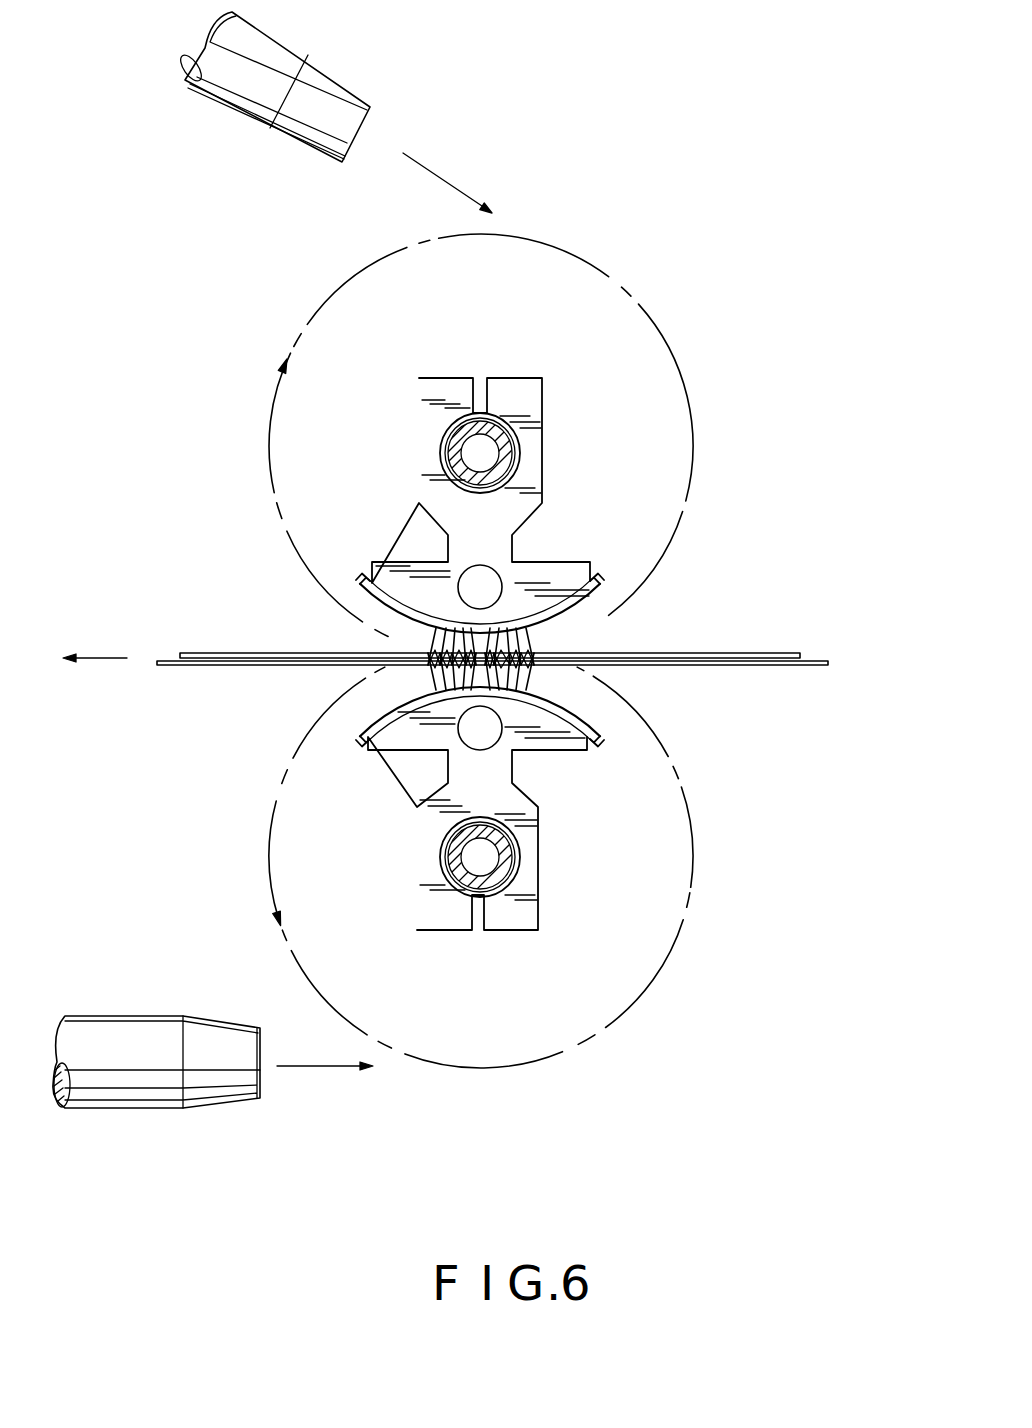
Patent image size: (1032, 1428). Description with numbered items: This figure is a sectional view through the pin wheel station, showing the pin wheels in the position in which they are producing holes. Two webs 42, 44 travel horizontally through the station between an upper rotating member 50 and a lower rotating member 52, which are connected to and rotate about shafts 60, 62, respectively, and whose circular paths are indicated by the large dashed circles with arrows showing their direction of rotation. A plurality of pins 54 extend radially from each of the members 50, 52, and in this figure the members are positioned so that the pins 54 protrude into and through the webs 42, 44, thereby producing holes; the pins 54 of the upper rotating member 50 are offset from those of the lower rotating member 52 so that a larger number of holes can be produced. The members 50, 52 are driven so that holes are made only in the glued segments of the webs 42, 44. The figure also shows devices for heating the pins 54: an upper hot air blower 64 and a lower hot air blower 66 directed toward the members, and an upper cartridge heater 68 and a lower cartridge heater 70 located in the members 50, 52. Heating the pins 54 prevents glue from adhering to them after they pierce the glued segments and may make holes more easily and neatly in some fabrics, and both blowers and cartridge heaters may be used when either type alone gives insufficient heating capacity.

The web 42 is at (800, 652).
The web 44 is at (828, 664).
The upper rotating member 50 is at (363, 592).
The lower rotating member 52 is at (358, 728).
The pins 54 is at (540, 641).
The shaft 60 is at (505, 453).
The shaft 62 is at (507, 857).
The upper hot air blower 64 is at (342, 98).
The lower hot air blower 66 is at (220, 1093).
The upper cartridge heater 68 is at (518, 550).
The lower cartridge heater 70 is at (485, 733).